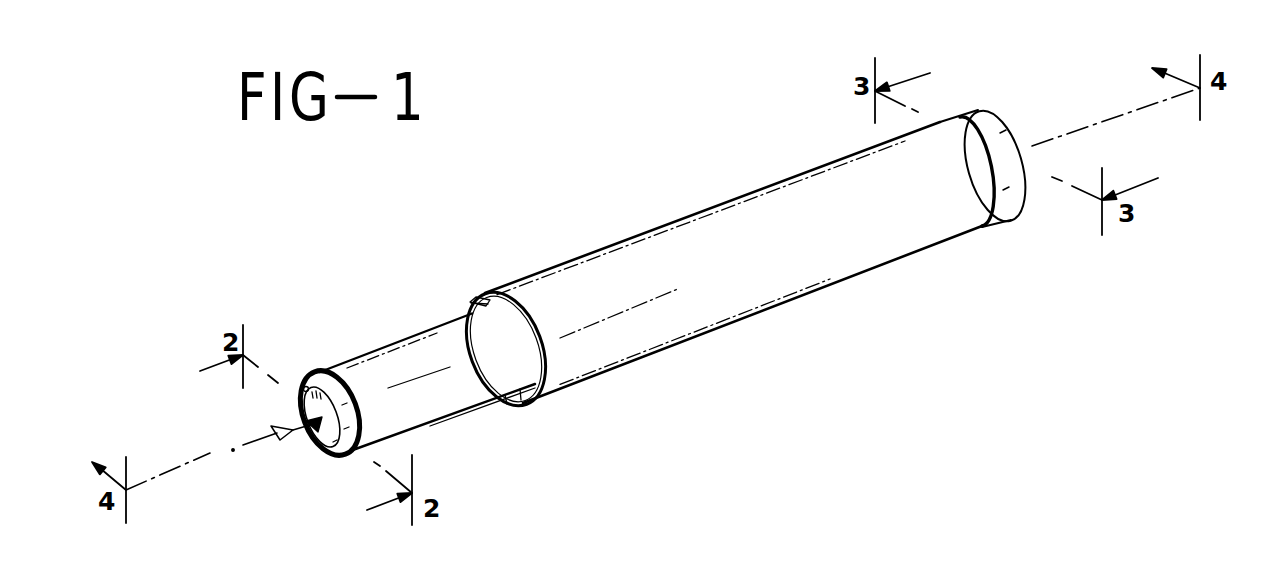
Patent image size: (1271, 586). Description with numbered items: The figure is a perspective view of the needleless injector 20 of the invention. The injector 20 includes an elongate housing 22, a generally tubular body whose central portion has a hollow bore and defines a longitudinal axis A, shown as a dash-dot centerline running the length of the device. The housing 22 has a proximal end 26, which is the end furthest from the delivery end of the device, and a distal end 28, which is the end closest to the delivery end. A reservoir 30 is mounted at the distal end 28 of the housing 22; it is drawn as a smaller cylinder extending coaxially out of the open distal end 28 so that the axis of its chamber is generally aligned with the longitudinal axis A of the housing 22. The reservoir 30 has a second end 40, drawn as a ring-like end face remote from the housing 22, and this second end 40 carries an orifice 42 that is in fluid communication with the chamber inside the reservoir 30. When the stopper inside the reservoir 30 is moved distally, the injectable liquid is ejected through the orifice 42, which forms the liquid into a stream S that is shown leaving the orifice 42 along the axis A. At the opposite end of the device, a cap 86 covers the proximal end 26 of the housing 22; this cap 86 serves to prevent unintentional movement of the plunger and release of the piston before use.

The injector 20 is at (673, 147).
The elongate housing 22 is at (767, 287).
The proximal end 26 is at (987, 110).
The distal end 28 is at (553, 368).
The reservoir 30 is at (420, 345).
The second end 40 is at (333, 374).
The orifice 42 is at (320, 430).
The cap 86 is at (1005, 222).
The longitudinal axis A is at (212, 453).
The stream S is at (278, 440).